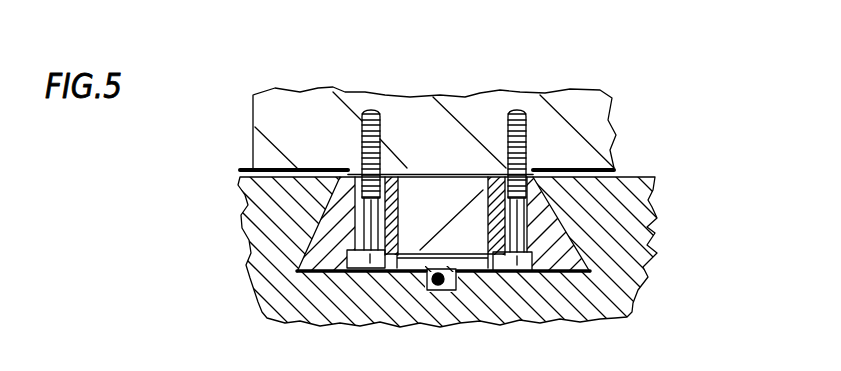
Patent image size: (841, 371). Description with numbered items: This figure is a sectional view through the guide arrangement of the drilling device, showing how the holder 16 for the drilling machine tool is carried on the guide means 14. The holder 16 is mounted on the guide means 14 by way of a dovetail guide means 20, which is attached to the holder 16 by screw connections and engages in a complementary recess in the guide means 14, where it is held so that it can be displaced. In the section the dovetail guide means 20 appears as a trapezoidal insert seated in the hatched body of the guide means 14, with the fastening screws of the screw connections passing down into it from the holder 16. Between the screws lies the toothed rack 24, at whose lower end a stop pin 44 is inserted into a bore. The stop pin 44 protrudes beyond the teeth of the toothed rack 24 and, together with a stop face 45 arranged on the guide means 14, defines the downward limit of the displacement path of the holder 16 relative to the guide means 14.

The guide means 14 is at (630, 288).
The holder 16 is at (612, 122).
The dovetail guide means 20 is at (573, 238).
The toothed rack 24 is at (447, 190).
The stop pin 44 is at (440, 284).
The stop face 45 is at (433, 282).